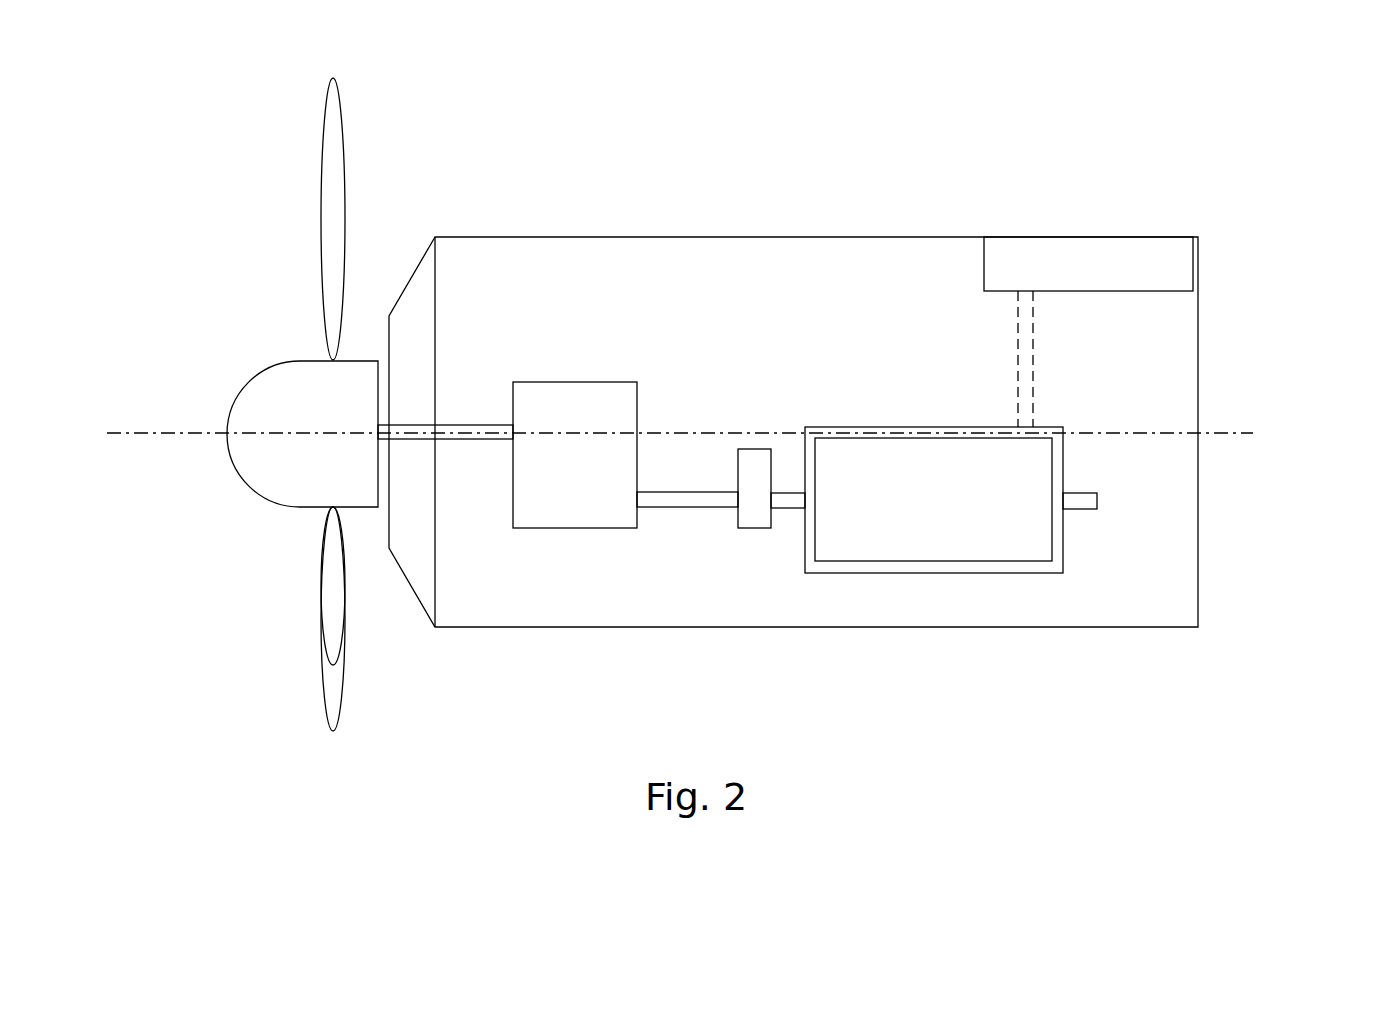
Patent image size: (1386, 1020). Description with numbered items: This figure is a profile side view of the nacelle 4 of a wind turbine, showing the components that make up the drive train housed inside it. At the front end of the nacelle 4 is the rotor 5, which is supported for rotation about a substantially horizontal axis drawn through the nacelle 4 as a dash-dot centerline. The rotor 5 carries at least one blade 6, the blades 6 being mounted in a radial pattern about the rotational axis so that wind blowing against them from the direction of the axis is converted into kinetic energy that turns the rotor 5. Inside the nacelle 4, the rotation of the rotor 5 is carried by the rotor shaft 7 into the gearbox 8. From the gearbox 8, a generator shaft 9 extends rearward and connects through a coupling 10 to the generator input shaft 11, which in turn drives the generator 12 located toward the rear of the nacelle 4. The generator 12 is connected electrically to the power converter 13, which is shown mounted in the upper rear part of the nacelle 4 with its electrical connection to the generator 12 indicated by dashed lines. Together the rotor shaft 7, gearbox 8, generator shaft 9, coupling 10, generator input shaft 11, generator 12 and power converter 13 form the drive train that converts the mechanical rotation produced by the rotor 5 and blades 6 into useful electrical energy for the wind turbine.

The nacelle 4 is at (1063, 146).
The rotor 5 is at (274, 384).
The blade 6 is at (318, 157).
The rotor shaft 7 is at (422, 426).
The gearbox 8 is at (558, 381).
The generator shaft 9 is at (660, 508).
The coupling 10 is at (749, 448).
The generator input shaft 11 is at (783, 509).
The generator 12 is at (940, 574).
The power converter 13 is at (1198, 268).